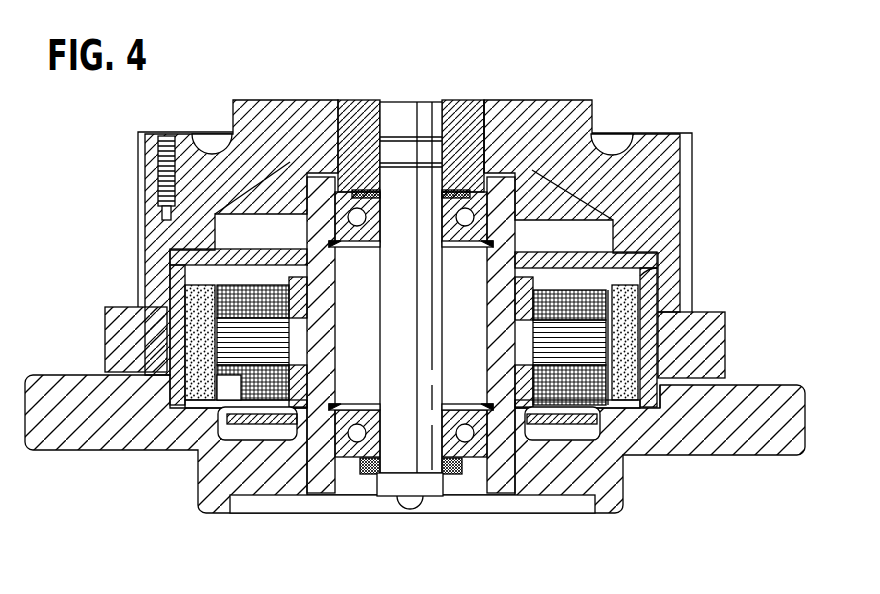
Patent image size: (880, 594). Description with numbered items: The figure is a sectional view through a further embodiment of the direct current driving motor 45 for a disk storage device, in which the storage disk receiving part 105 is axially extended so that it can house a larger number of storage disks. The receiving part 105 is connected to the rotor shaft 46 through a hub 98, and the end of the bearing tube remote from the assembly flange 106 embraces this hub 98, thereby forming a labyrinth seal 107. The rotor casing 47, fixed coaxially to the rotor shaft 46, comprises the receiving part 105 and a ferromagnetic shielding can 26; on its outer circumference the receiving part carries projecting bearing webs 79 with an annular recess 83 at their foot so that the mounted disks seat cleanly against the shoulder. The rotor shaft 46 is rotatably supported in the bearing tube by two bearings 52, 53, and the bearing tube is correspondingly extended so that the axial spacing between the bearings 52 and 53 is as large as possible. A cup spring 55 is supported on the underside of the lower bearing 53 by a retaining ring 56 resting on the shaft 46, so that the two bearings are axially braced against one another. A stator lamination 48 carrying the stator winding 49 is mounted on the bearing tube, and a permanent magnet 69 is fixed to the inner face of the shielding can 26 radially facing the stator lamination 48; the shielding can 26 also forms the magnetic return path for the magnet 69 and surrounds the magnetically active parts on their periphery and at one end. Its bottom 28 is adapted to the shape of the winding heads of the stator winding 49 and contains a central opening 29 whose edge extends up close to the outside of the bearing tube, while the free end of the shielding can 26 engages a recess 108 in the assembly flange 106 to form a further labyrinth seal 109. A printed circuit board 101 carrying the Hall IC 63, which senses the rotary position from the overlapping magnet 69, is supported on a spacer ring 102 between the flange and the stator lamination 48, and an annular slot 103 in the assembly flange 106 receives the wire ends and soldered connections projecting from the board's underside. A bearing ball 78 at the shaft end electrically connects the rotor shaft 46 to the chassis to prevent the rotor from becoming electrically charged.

The shielding can 26 is at (648, 368).
The bottom of shielding can 28 is at (575, 258).
The central opening 29 is at (306, 249).
The driving motor 45 is at (714, 190).
The rotor shaft 46 is at (424, 112).
The rotor casing 47 is at (133, 244).
The stator lamination 48 is at (160, 352).
The stator winding 49 is at (200, 293).
The bearing 52 is at (362, 247).
The bearing 53 is at (357, 404).
The cup spring 55 is at (367, 472).
The retaining ring 56 is at (455, 478).
The Hall IC 63 is at (230, 402).
The permanent magnet 69 is at (680, 283).
The bearing ball 78 is at (414, 512).
The bearing webs 79 is at (693, 150).
The annular recess 83 is at (652, 335).
The hub 98 is at (466, 108).
The printed circuit board 101 is at (577, 428).
The spacer ring 102 is at (328, 372).
The annular slot 103 is at (271, 433).
The storage disk receiving part 105 is at (290, 122).
The assembly flange 106 is at (772, 444).
The labyrinth seal 107 is at (493, 163).
The recess 108 is at (645, 414).
The labyrinth seal 109 is at (662, 398).